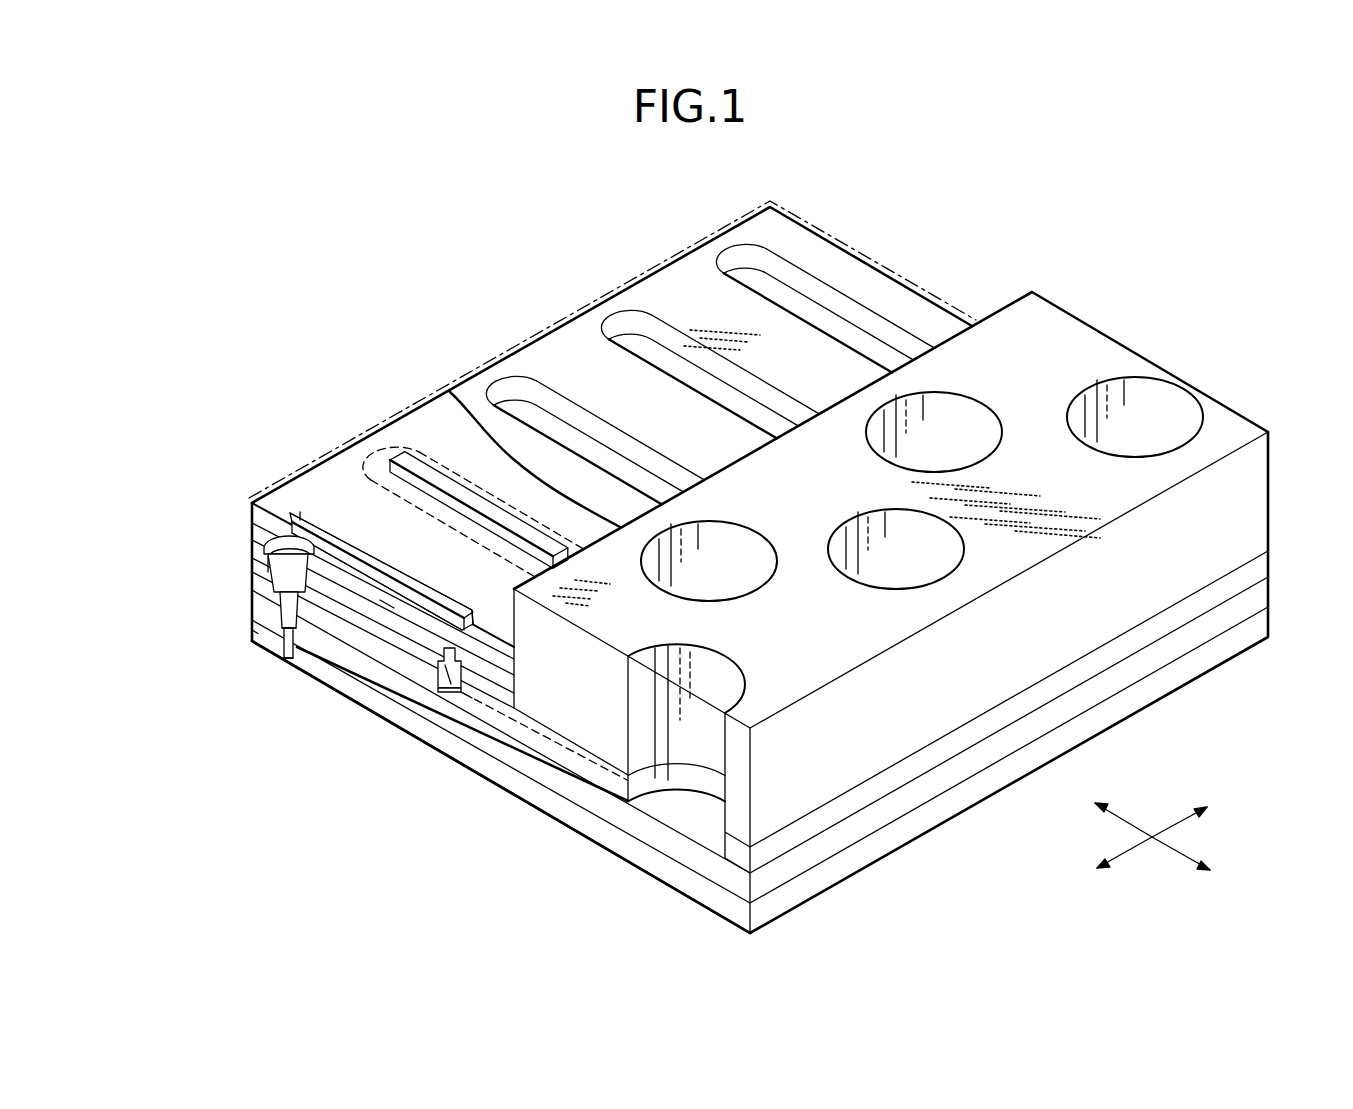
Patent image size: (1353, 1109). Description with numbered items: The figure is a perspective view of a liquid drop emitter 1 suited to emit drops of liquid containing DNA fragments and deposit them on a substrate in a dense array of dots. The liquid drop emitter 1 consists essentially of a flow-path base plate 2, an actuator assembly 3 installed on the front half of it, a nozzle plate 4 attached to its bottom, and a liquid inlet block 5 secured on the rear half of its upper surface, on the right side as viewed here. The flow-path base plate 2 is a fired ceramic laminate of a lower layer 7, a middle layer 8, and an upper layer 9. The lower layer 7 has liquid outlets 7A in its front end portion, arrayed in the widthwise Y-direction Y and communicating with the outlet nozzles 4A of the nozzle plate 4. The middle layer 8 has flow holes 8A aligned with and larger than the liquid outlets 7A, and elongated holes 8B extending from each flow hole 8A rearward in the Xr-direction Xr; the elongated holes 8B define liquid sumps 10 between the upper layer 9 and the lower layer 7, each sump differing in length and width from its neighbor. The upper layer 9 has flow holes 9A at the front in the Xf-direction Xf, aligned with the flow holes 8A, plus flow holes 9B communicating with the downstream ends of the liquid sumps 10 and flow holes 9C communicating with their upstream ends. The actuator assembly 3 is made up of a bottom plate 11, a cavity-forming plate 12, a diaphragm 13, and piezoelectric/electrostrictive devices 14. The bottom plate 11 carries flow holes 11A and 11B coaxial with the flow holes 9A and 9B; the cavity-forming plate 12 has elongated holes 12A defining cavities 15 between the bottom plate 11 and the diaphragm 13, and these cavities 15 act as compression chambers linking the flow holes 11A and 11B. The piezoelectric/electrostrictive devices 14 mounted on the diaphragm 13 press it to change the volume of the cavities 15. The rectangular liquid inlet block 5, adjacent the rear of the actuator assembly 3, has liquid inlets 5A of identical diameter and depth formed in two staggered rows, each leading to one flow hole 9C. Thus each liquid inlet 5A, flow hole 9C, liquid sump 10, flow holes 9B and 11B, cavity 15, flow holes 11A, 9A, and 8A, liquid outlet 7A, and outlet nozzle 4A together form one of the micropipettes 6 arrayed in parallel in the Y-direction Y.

The liquid drop emitter 1 is at (1047, 272).
The flow-path base plate 2 is at (160, 565).
The actuator assembly 3 is at (160, 372).
The nozzle plate 4 is at (266, 640).
The outlet nozzles 4A is at (292, 662).
The liquid inlet block 5 is at (1088, 346).
The liquid inlets 5A is at (955, 405).
The micropipettes 6 is at (797, 252).
The lower layer 7 is at (264, 630).
The liquid outlets 7A is at (282, 648).
The middle layer 8 is at (264, 604).
The flow holes 8A is at (290, 642).
The elongated holes 8B is at (470, 716).
The upper layer 9 is at (264, 580).
The flow holes 9A is at (288, 545).
The flow holes 9B is at (443, 677).
The flow holes 9C is at (677, 777).
The liquid sumps 10 is at (541, 760).
The bottom plate 11 is at (264, 558).
The flow holes 11A is at (302, 512).
The flow holes 11B is at (468, 715).
The cavity-forming plate 12 is at (264, 541).
The elongated holes 12A is at (268, 549).
The diaphragm 13 is at (264, 524).
The piezoelectric/electrostrictive devices 14 is at (408, 458).
The cavities 15 is at (387, 604).
The Xf-direction Xf is at (1140, 830).
The Xr-direction Xr is at (1170, 845).
The Y-direction Y is at (1166, 826).